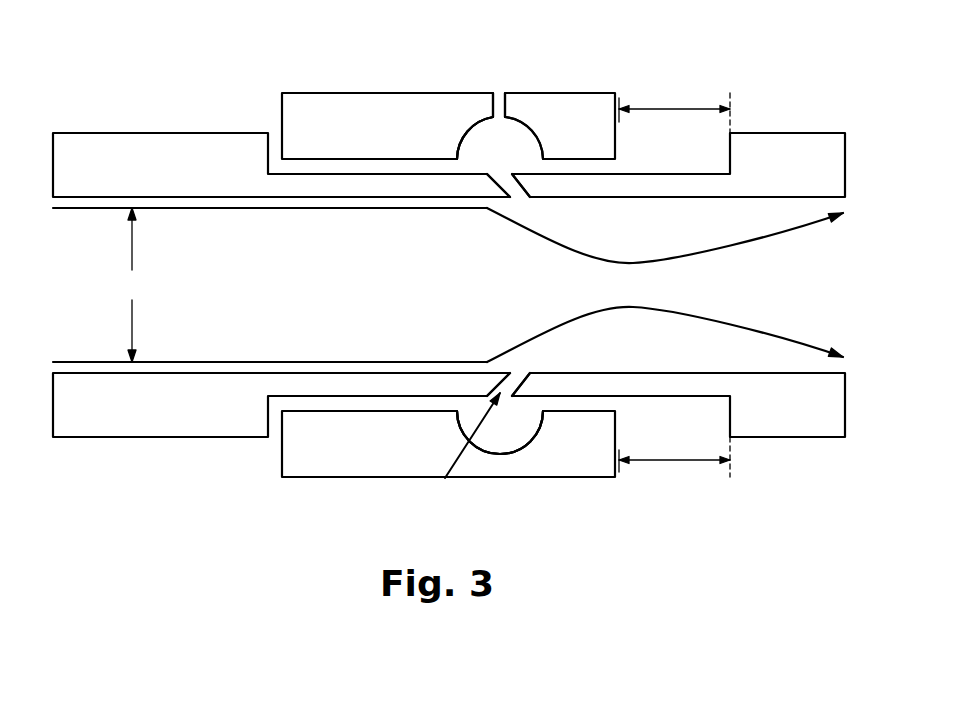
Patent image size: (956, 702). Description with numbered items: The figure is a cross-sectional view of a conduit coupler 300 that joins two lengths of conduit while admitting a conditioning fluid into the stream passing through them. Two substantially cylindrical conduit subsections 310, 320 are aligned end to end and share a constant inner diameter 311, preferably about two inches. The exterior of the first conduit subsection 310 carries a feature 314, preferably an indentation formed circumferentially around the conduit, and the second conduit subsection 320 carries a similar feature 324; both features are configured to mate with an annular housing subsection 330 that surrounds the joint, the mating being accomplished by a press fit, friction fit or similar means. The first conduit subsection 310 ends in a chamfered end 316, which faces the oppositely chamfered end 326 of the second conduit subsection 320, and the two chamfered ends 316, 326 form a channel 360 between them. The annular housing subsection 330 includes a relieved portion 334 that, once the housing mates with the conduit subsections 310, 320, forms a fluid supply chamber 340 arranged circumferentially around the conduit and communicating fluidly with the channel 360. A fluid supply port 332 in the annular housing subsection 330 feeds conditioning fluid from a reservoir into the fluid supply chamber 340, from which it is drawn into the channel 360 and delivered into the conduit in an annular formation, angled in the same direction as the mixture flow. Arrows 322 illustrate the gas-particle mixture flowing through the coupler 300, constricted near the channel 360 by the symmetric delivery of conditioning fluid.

The conduit coupler 300 is at (124, 25).
The conduit subsection 310 is at (148, 437).
The inner diameter 311 is at (131, 285).
The feature 314 is at (283, 165).
The chamfered end 316 is at (513, 207).
The conduit subsection 320 is at (808, 437).
The arrows 322 is at (633, 263).
The feature 324 is at (673, 152).
The chamfered end 326 is at (527, 207).
The annular housing subsection 330 is at (345, 477).
The fluid supply port 332 is at (497, 93).
The relieved portion 334 is at (470, 125).
The fluid supply chamber 340 is at (481, 155).
The channel 360 is at (445, 478).